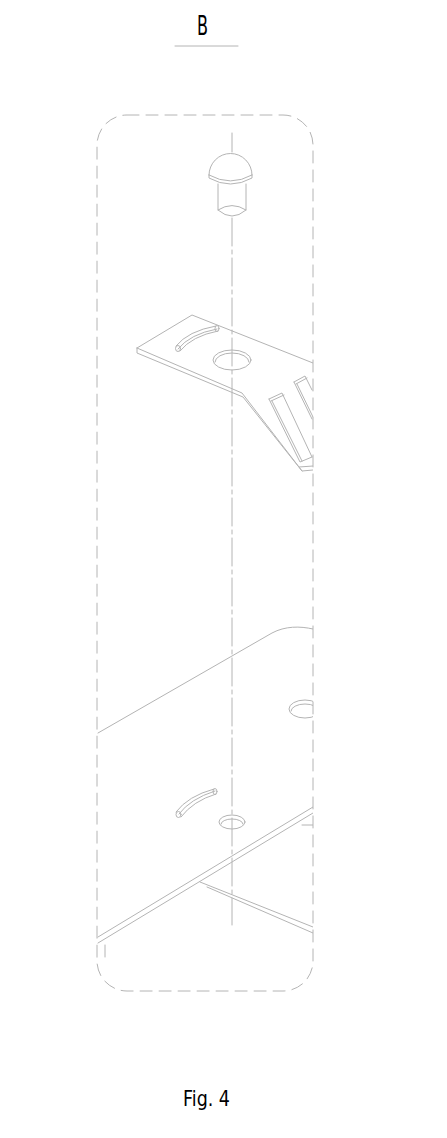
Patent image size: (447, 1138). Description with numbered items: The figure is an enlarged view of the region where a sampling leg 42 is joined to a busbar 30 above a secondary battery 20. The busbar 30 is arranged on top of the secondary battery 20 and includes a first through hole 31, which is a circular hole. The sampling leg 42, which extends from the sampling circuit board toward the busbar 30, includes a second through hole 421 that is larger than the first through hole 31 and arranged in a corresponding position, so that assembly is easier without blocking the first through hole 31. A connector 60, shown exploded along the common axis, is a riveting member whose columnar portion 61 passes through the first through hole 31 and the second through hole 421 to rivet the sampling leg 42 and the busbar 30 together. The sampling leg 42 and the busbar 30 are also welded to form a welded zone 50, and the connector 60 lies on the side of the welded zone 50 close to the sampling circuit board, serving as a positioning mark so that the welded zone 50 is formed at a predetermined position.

The secondary battery 20 is at (235, 917).
The busbar 30 is at (162, 725).
The first through hole 31 is at (242, 817).
The sampling leg 42 is at (209, 380).
The second through hole 421 is at (243, 358).
The welded zone 50 is at (190, 337).
The connector 60 is at (288, 198).
The columnar portion 61 is at (235, 205).